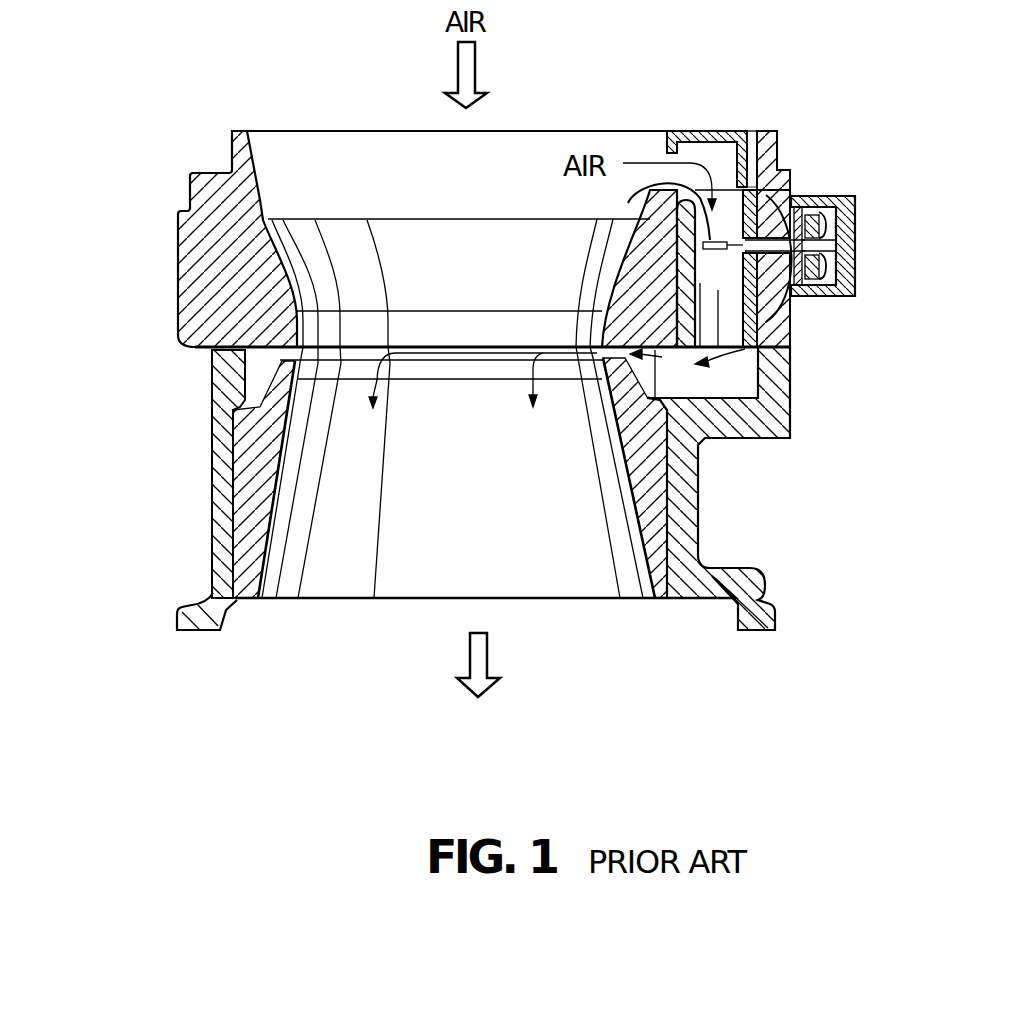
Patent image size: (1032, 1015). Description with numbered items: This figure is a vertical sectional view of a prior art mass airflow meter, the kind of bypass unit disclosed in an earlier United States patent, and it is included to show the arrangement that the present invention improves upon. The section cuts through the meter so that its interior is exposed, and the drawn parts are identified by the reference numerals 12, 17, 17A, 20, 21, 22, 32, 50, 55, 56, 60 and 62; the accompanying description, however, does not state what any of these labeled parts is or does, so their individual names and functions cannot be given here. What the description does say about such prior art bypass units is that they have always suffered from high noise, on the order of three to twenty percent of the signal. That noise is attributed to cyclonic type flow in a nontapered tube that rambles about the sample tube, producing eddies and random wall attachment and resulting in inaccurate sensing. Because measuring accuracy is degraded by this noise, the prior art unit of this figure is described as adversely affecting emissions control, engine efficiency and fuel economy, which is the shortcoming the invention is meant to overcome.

The air inlet tube 12 is at (653, 265).
The compressor inlet vanes 17 is at (438, 263).
The housing 17A is at (182, 270).
The air gap 20 is at (727, 160).
The air passage 21 is at (512, 355).
The plate 22 is at (692, 128).
The orifice plate 32 is at (677, 240).
The passage 50 is at (682, 265).
The valve stem 55 is at (795, 194).
The spherical seat 56 is at (785, 300).
The valve housing 60 is at (828, 196).
The valve seal 62 is at (827, 271).